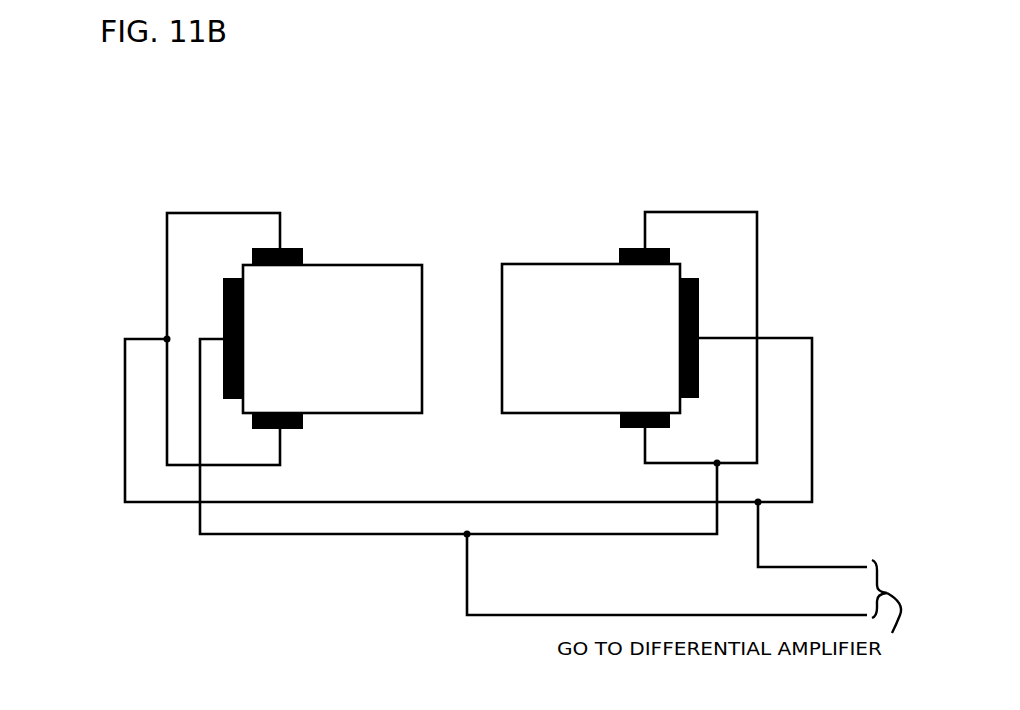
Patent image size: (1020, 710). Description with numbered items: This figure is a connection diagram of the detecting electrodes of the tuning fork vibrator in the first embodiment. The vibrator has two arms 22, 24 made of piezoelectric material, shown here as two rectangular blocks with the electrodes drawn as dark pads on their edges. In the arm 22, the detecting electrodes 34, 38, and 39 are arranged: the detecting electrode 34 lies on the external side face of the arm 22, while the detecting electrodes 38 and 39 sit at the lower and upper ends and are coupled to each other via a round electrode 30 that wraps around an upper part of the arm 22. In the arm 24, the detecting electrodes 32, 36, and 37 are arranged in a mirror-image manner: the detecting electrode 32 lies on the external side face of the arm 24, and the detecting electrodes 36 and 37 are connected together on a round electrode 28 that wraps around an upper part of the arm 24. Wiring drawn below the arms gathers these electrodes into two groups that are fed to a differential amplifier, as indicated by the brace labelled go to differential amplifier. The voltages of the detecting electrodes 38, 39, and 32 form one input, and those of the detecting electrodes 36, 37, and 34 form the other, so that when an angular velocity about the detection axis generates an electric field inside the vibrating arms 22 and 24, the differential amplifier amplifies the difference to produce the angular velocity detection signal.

The arm 22 is at (375, 264).
The arm 24 is at (525, 263).
The round electrode 28 is at (745, 212).
The round electrode 30 is at (188, 212).
The detecting electrode 32 is at (699, 303).
The detecting electrode 34 is at (223, 303).
The detecting electrode 36 is at (620, 428).
The detecting electrode 37 is at (622, 248).
The detecting electrode 38 is at (303, 429).
The detecting electrode 39 is at (300, 248).